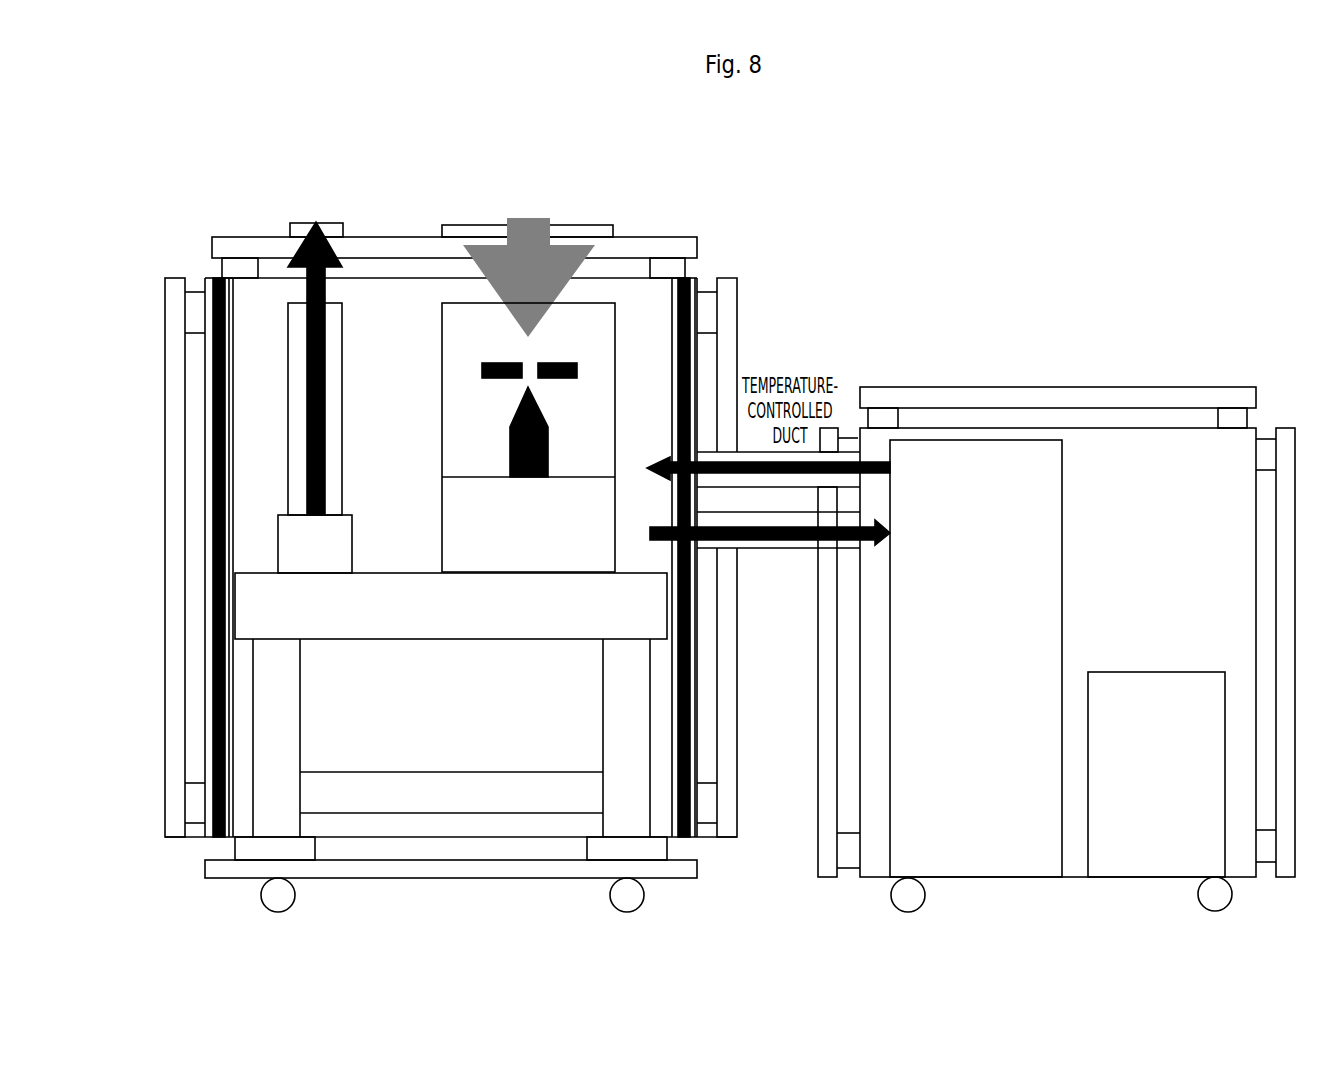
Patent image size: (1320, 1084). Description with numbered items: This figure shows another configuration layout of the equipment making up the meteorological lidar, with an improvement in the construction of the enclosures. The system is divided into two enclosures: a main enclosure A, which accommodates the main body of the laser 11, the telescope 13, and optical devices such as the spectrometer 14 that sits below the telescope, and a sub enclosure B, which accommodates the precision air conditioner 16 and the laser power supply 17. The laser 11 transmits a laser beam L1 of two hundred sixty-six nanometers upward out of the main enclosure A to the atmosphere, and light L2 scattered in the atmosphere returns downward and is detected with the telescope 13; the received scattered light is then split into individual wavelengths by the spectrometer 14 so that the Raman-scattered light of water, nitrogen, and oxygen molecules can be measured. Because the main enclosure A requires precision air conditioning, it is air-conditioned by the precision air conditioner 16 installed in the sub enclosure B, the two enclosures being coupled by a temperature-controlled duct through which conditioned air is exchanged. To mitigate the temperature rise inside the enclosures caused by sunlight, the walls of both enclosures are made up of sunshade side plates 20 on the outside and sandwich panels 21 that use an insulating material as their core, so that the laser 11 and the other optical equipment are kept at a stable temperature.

The main enclosure A is at (653, 273).
The sub enclosure B is at (1148, 424).
The laser beam L1 is at (295, 250).
The scattered light L2 is at (553, 227).
The laser 11 is at (278, 515).
The telescope 13 is at (512, 418).
The spectrometer 14 is at (603, 507).
The precision air conditioner 16 is at (985, 865).
The laser power supply 17 is at (1112, 857).
The sunshade side plate 20 is at (730, 330).
The sandwich panel 21 is at (213, 518).